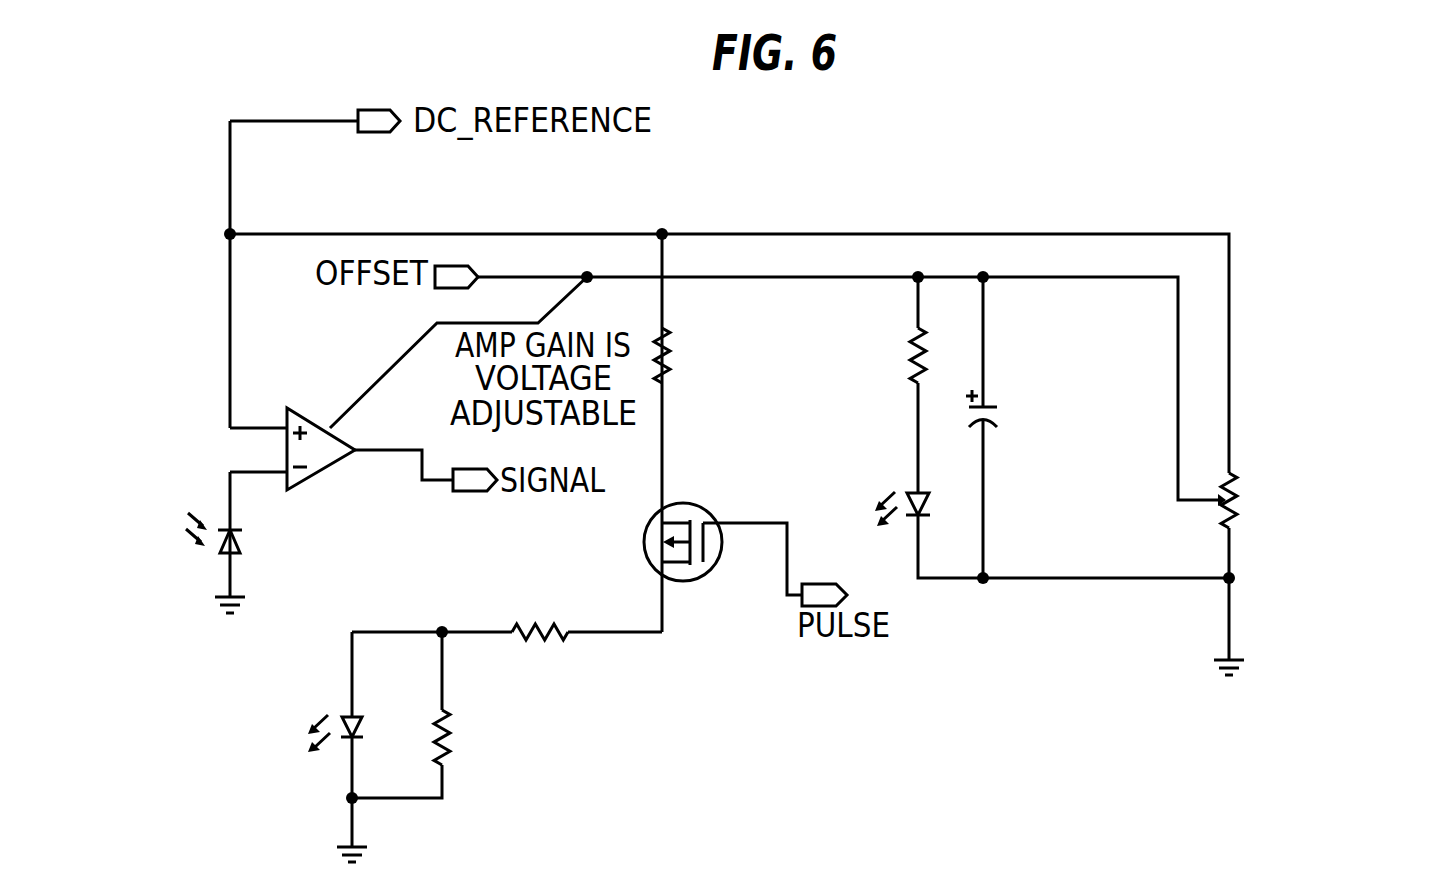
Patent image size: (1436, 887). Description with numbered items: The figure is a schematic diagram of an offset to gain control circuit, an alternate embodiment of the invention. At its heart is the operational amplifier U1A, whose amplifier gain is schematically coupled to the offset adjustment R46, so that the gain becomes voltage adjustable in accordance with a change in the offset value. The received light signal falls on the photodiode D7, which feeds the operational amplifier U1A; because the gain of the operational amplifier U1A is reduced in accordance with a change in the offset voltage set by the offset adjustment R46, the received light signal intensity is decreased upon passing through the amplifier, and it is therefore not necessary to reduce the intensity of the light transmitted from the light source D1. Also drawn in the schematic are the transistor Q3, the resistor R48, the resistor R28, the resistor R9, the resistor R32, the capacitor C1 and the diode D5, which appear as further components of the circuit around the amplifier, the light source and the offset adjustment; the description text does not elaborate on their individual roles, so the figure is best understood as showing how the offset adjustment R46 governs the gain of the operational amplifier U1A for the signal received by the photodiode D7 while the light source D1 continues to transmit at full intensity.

The operational amplifier U1A is at (336, 440).
The photodiode D7 is at (315, 540).
The MOSFET transistor 100-1001 Q3 is at (628, 543).
The 1.0 ohm resistor R48 is at (542, 632).
The light source D1 is at (302, 739).
The 1.0K resistor R28 is at (473, 744).
The 200 ohm resistor R9 is at (694, 371).
The 1.0K resistor R32 is at (885, 354).
The 10UF 10V capacitor C1 is at (1048, 413).
The green LED D5 is at (883, 488).
The offset adjustment R46 is at (1291, 526).